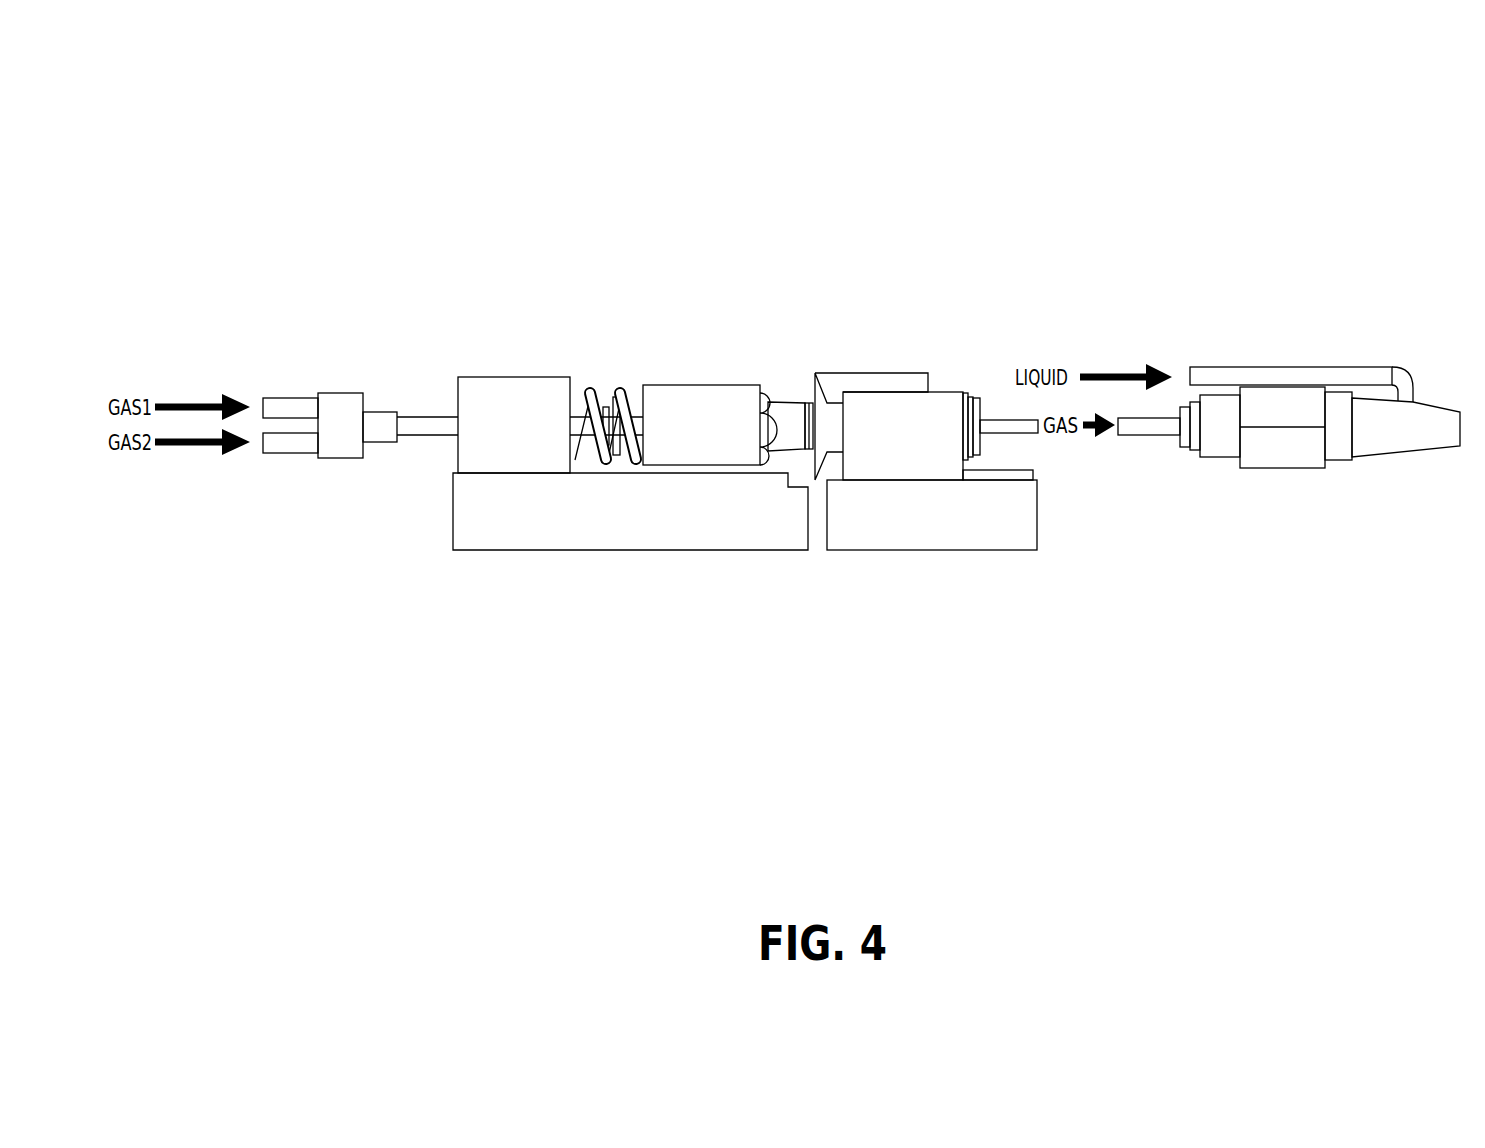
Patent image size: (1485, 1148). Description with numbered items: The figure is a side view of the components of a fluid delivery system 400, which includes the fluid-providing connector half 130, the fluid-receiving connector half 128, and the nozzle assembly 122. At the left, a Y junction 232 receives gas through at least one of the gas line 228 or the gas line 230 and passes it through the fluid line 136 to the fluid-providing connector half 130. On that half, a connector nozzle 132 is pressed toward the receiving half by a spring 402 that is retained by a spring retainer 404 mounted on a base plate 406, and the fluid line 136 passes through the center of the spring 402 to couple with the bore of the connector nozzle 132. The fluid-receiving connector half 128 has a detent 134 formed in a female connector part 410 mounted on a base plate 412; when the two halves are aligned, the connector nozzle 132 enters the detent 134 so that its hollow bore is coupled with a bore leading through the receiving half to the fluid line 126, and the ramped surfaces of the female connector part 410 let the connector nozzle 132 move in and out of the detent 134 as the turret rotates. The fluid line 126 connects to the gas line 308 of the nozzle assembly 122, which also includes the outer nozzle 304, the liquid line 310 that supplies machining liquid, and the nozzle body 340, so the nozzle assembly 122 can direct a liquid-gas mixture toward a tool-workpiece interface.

The fluid delivery system 400 is at (174, 66).
The gas line 228 is at (297, 397).
The gas line 230 is at (297, 454).
The Y junction 232 is at (363, 393).
The fluid line 136 is at (437, 437).
The spring retainer 404 is at (517, 377).
The base plate 406 is at (455, 551).
The spring 402 is at (588, 386).
The connector nozzle 132 is at (781, 402).
The detent 134 is at (815, 397).
The female connector part 410 is at (870, 373).
The fluid line 126 is at (1007, 418).
The base plate 412 is at (1037, 550).
The fluid-providing connector half 130 is at (551, 573).
The fluid-receiving connector half 128 is at (972, 590).
The nozzle assembly 122 is at (1355, 326).
The liquid line 310 is at (1290, 367).
The gas line 308 is at (1150, 437).
The nozzle body 340 is at (1283, 469).
The outer nozzle 304 is at (1400, 450).